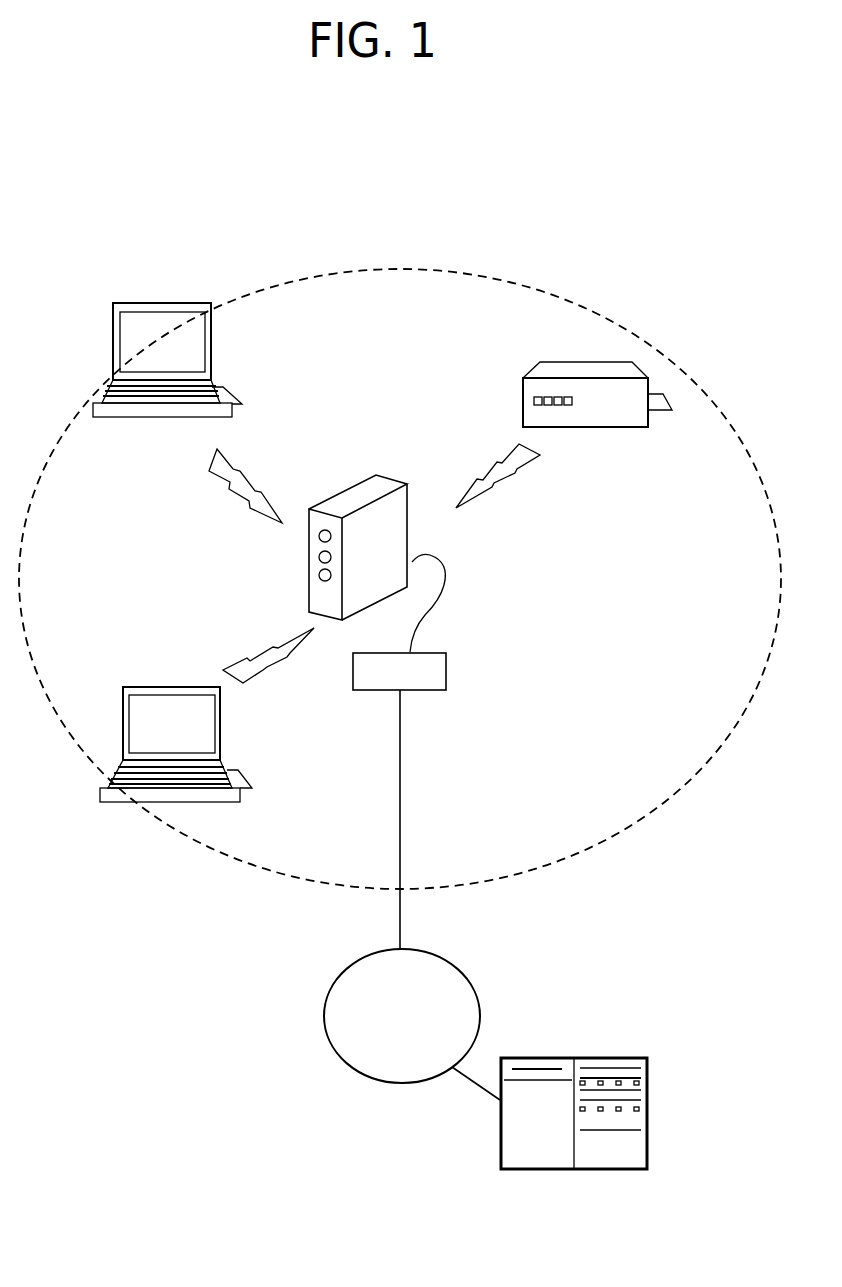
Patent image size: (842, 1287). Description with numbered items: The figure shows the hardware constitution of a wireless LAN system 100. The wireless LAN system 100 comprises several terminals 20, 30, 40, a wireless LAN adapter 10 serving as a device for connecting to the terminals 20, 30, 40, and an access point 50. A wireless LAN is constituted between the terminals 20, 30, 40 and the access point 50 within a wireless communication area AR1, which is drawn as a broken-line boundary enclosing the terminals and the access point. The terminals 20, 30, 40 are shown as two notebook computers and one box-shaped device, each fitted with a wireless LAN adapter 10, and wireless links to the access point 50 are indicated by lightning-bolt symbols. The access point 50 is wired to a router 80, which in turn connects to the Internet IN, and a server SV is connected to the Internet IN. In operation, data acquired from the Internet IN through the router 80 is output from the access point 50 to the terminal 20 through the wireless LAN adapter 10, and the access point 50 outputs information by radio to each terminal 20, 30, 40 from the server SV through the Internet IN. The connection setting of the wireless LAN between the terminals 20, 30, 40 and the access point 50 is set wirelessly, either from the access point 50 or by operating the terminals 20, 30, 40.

The wireless LAN system 100 is at (712, 208).
The wireless communication area AR1 is at (435, 270).
The wireless LAN adapter 10 is at (232, 392).
The terminal 20 is at (597, 367).
The terminal 30 is at (211, 352).
The terminal 40 is at (219, 735).
The access point 50 is at (376, 475).
The router 80 is at (447, 667).
The Internet IN is at (457, 972).
The server SV is at (632, 1062).